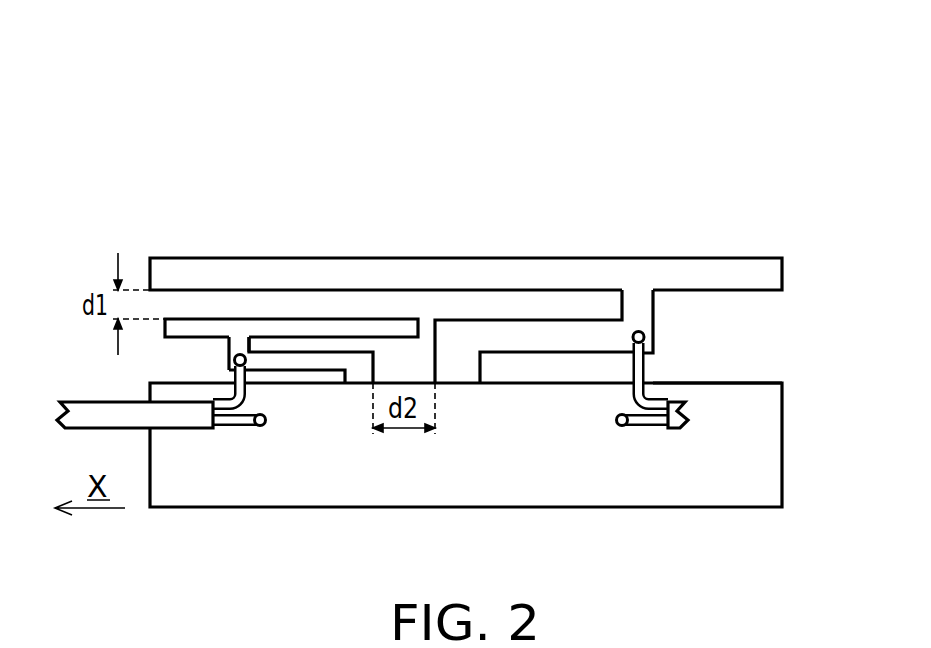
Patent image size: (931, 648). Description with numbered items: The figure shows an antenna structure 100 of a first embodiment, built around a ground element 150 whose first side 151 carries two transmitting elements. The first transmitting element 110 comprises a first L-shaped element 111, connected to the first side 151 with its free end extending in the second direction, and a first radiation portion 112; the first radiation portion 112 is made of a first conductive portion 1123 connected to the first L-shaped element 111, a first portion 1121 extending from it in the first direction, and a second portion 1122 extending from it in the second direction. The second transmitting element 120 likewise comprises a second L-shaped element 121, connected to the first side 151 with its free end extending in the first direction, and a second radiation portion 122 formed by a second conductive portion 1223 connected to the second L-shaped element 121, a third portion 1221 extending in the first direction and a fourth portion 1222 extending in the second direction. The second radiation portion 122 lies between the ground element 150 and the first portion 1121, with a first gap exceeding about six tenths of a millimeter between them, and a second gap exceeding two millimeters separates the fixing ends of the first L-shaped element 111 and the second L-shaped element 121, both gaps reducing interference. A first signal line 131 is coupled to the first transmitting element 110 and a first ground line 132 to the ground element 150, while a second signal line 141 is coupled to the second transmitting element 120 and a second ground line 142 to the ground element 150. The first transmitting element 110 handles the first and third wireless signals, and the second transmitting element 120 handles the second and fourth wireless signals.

The antenna structure 100 is at (137, 42).
The first transmitting element 110 is at (658, 110).
The first L-shaped element 111 is at (459, 333).
The first radiation portion 112 is at (760, 165).
The first portion 1121 is at (544, 277).
The second portion 1122 is at (733, 277).
The first conductive portion 1123 is at (638, 305).
The second transmitting element 120 is at (378, 108).
The second L-shaped element 121 is at (359, 363).
The second radiation portion 122 is at (340, 165).
The third portion 1221 is at (178, 330).
The fourth portion 1222 is at (303, 330).
The second conductive portion 1223 is at (238, 340).
The first signal line 131 is at (643, 368).
The first ground line 132 is at (651, 430).
The second signal line 141 is at (233, 371).
The second ground line 142 is at (237, 430).
The ground element 150 is at (465, 478).
The first side 151 is at (753, 383).